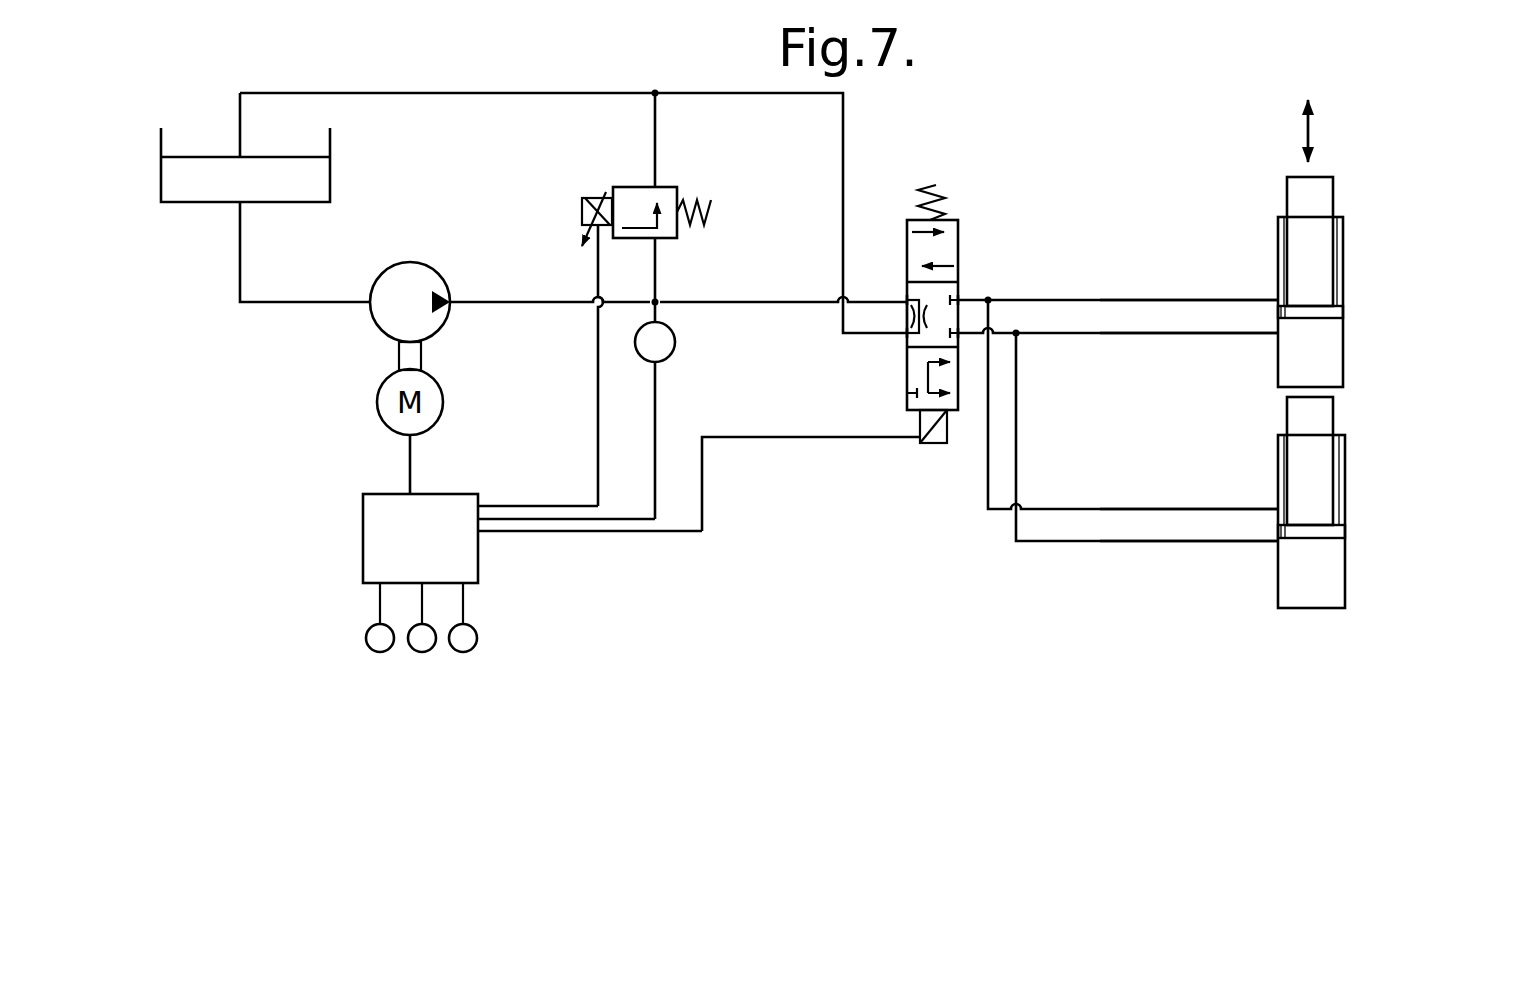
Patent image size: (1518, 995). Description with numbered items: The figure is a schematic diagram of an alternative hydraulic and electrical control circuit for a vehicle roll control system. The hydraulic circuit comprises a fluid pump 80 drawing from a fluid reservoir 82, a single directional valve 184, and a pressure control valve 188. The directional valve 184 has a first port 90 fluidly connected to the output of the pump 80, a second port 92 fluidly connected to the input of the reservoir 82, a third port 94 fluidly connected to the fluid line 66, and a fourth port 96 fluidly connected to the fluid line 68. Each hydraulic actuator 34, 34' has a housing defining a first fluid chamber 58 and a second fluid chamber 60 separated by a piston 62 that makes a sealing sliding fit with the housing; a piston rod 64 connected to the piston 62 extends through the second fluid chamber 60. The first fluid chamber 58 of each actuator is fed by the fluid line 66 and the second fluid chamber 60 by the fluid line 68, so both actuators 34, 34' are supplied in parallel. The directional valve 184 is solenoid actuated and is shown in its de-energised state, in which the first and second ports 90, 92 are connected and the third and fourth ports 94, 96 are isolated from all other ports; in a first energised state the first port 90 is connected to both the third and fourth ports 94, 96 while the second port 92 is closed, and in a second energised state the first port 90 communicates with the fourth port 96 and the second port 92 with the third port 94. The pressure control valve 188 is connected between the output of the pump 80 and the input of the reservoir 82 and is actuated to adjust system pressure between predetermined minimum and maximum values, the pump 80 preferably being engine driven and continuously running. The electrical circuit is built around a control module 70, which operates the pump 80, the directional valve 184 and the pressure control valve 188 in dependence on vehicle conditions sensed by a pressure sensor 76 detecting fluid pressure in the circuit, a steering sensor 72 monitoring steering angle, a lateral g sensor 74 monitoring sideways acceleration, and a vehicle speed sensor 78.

The hydraulic actuator 34 is at (1384, 356).
The hydraulic actuator 34' is at (1450, 496).
The first fluid chamber 58 is at (1335, 365).
The second fluid chamber 60 is at (1338, 252).
The piston 62 is at (1345, 311).
The piston rod 64 is at (1318, 194).
The fluid line 66 is at (1222, 335).
The fluid line 68 is at (1218, 298).
The control module 70 is at (374, 535).
The steering sensor 72 is at (373, 640).
The lateral g sensor 74 is at (415, 648).
The pressure sensor 76 is at (676, 344).
The vehicle speed sensor 78 is at (463, 648).
The fluid pump 80 is at (383, 338).
The fluid reservoir 82 is at (202, 184).
The first port 90 is at (906, 300).
The second port 92 is at (907, 333).
The third port 94 is at (960, 335).
The fourth port 96 is at (960, 300).
The directional valve 184 is at (982, 213).
The pressure control valve 188 is at (661, 186).